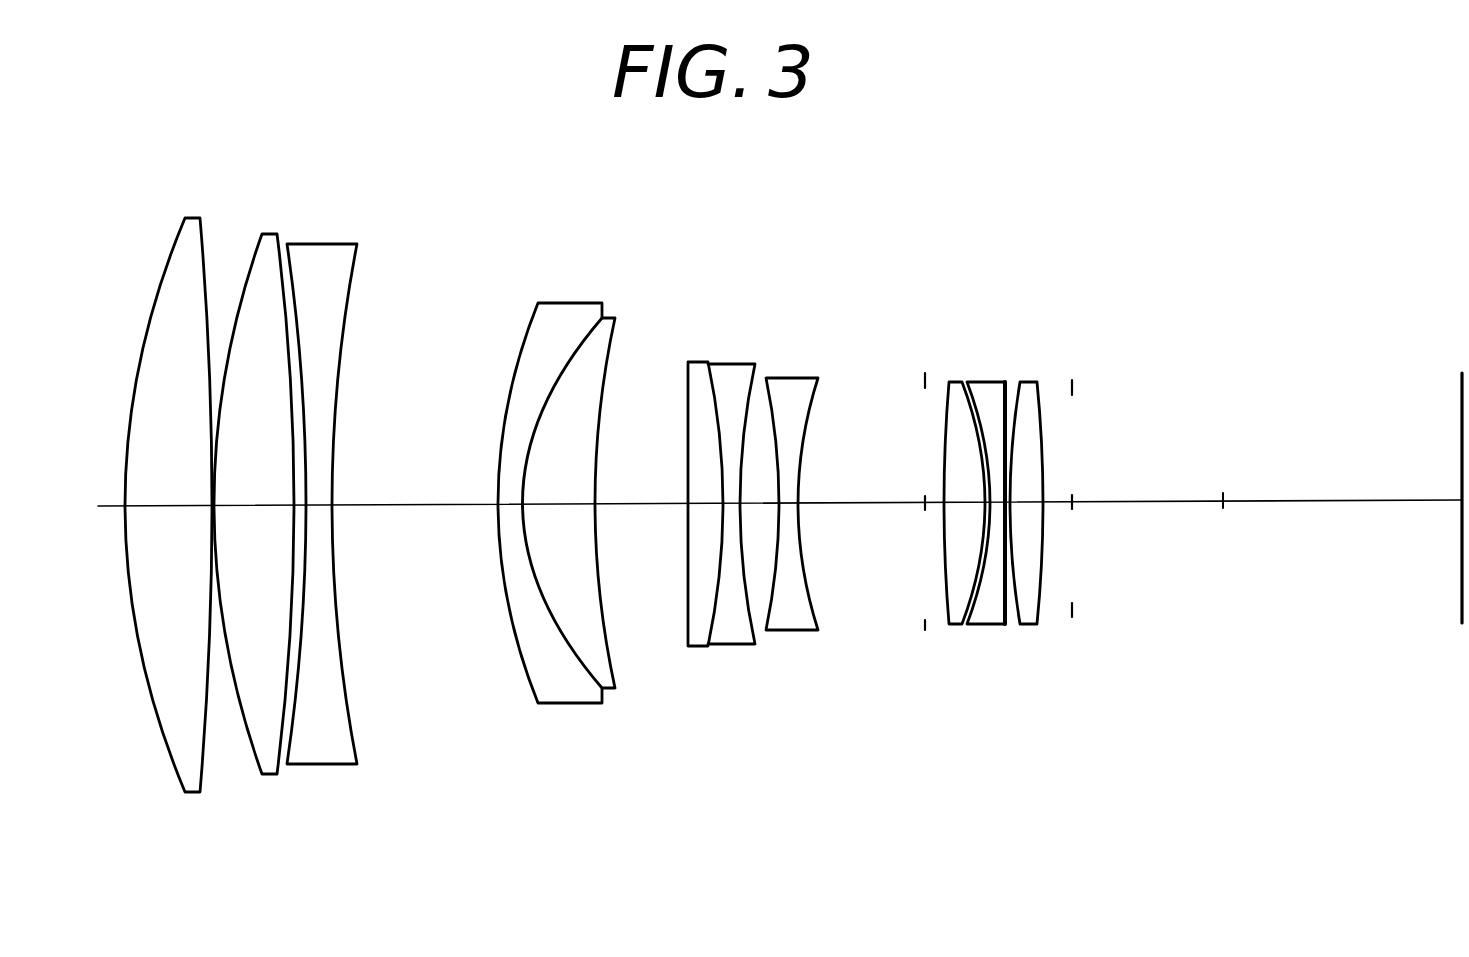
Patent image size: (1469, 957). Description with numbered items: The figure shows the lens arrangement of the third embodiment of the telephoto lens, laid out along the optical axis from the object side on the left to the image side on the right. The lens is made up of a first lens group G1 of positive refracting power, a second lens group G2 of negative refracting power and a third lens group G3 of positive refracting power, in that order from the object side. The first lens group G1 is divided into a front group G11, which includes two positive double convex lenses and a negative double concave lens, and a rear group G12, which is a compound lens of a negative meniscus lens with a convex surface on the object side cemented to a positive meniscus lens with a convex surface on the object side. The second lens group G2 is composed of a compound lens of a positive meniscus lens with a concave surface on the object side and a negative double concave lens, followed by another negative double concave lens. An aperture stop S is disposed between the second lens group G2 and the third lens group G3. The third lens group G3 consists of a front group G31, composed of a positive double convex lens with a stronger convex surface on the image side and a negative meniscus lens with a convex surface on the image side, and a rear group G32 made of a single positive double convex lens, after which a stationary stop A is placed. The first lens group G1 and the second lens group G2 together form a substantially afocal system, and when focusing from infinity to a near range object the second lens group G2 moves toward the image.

The first lens group G1 is at (379, 558).
The front group of first lens group G11 is at (368, 788).
The rear group of first lens group G12 is at (566, 533).
The second lens group G2 is at (838, 650).
The third lens group G3 is at (1001, 552).
The front group of third lens group G31 is at (1008, 622).
The rear group of third lens group G32 is at (1035, 529).
The aperture stop S is at (925, 483).
The stationary stop A is at (1070, 479).